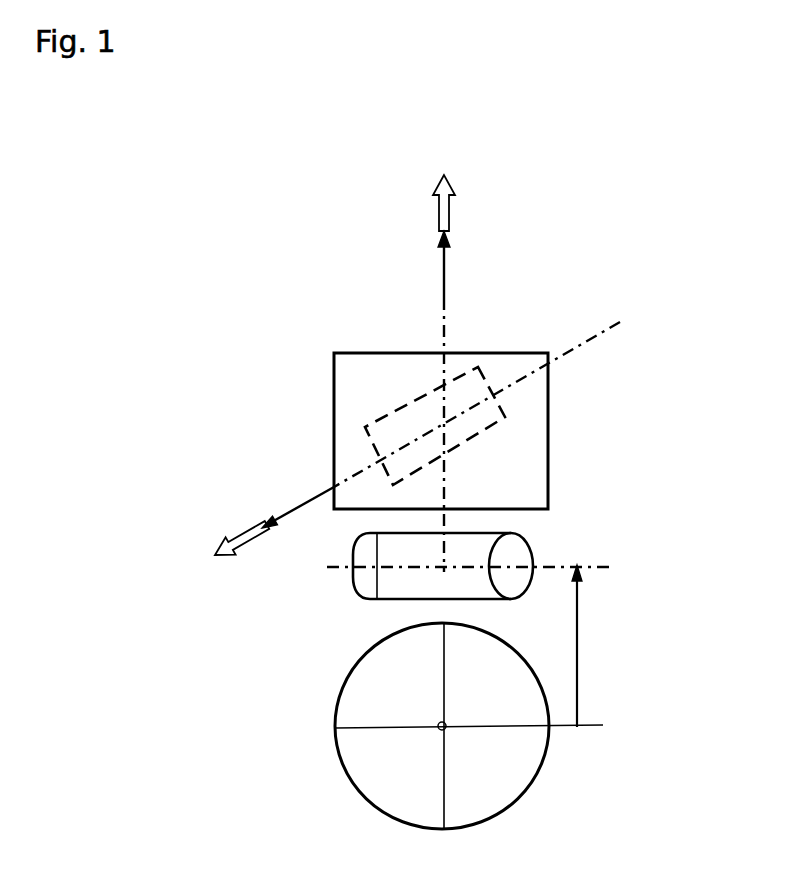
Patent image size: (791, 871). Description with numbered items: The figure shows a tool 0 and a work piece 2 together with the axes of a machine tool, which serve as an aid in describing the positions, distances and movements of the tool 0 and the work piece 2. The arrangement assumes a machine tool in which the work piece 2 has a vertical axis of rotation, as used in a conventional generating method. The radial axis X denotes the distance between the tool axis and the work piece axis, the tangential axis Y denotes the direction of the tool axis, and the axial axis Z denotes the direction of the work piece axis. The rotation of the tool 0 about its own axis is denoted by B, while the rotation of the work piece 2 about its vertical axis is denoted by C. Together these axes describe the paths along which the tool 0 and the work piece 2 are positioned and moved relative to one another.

The tool 0 is at (497, 417).
The work piece 2 is at (496, 489).
The distance between the axes X is at (600, 646).
The direction of the tool axis Y is at (441, 425).
The direction of the work piece axis Z is at (476, 401).
The rotation of tool B is at (235, 520).
The rotation of work piece C is at (473, 203).